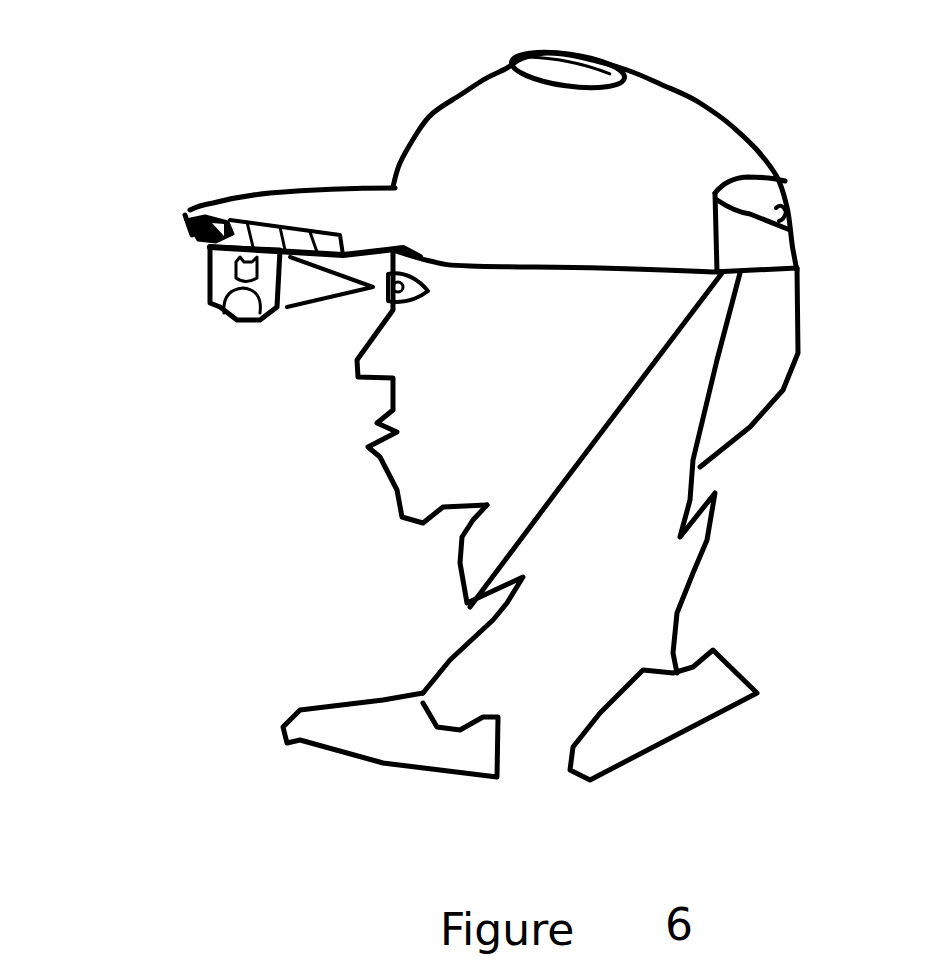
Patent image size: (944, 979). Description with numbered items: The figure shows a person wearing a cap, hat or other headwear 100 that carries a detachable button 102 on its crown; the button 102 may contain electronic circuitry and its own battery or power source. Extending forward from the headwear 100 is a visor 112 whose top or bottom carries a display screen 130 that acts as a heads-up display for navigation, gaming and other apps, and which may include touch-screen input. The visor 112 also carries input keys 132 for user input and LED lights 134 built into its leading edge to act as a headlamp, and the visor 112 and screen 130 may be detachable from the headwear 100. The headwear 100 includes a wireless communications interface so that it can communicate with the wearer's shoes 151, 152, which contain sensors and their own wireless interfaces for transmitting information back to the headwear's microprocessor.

The headwear 100 is at (745, 130).
The detachable button 102 is at (588, 54).
The visor 112 is at (293, 190).
The display screen 130 is at (232, 317).
The input keys 132 is at (187, 222).
The LED lights 134 is at (182, 232).
The shoe 151 is at (270, 720).
The shoe 152 is at (737, 652).